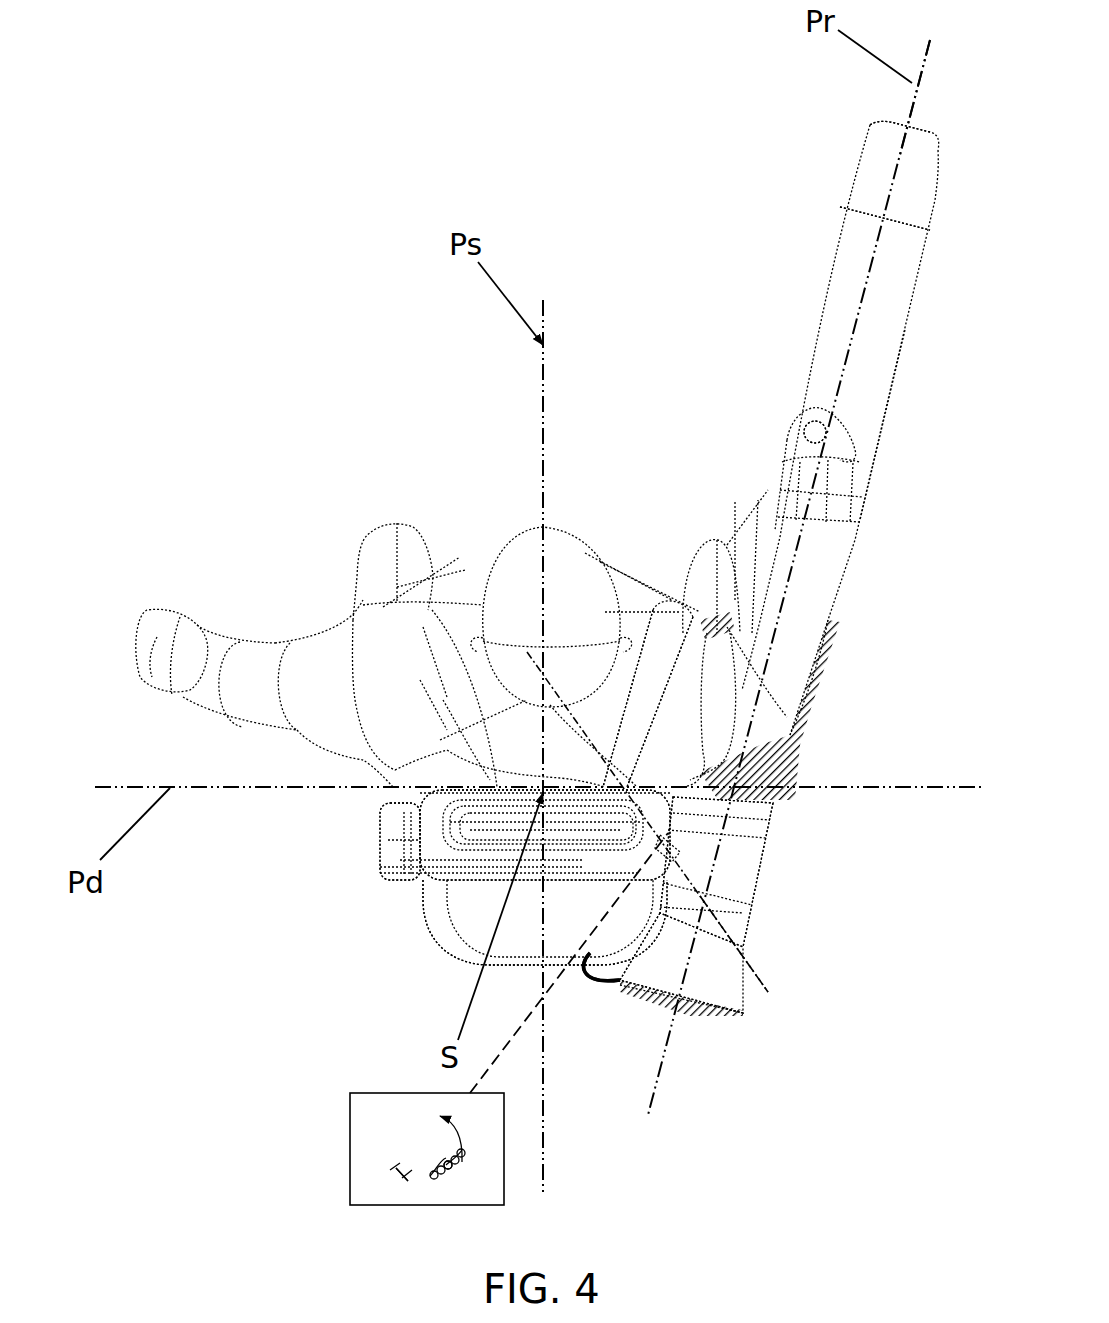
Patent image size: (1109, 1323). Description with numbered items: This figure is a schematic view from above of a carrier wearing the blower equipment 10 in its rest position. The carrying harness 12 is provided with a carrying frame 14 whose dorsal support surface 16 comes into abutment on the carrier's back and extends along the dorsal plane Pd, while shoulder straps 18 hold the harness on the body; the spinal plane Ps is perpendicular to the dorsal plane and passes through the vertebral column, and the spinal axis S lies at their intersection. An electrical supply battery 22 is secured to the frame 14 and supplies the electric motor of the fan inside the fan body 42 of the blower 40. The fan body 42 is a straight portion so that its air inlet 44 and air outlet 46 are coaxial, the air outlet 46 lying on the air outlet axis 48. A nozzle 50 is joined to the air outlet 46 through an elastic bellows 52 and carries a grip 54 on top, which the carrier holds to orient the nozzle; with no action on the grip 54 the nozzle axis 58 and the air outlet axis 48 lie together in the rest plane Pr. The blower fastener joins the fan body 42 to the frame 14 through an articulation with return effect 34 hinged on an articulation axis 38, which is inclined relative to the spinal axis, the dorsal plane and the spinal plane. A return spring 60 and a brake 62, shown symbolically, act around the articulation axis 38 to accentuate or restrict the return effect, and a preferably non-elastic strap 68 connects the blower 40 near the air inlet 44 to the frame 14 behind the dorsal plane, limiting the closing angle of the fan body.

The blower equipment 10 is at (865, 820).
The carrying harness 12 is at (445, 846).
The carrying frame 14 is at (445, 920).
The dorsal support surface 16 is at (503, 780).
The shoulder straps 18 is at (680, 607).
The electrical supply battery 22 is at (393, 828).
The articulation with return effect 34 is at (672, 845).
The articulation axis 38 is at (765, 990).
The blower 40 is at (752, 1010).
The fan body 42 is at (735, 862).
The air inlet 44 is at (695, 1015).
The air outlet 46 is at (750, 780).
The air outlet axis 48 is at (910, 105).
The nozzle 50 is at (833, 315).
The elastic bellows 52 is at (790, 775).
The grip 54 is at (808, 428).
The nozzle axis 58 is at (910, 105).
The return spring 60 is at (447, 1165).
The brake 62 is at (403, 1175).
The strap 68 is at (597, 985).